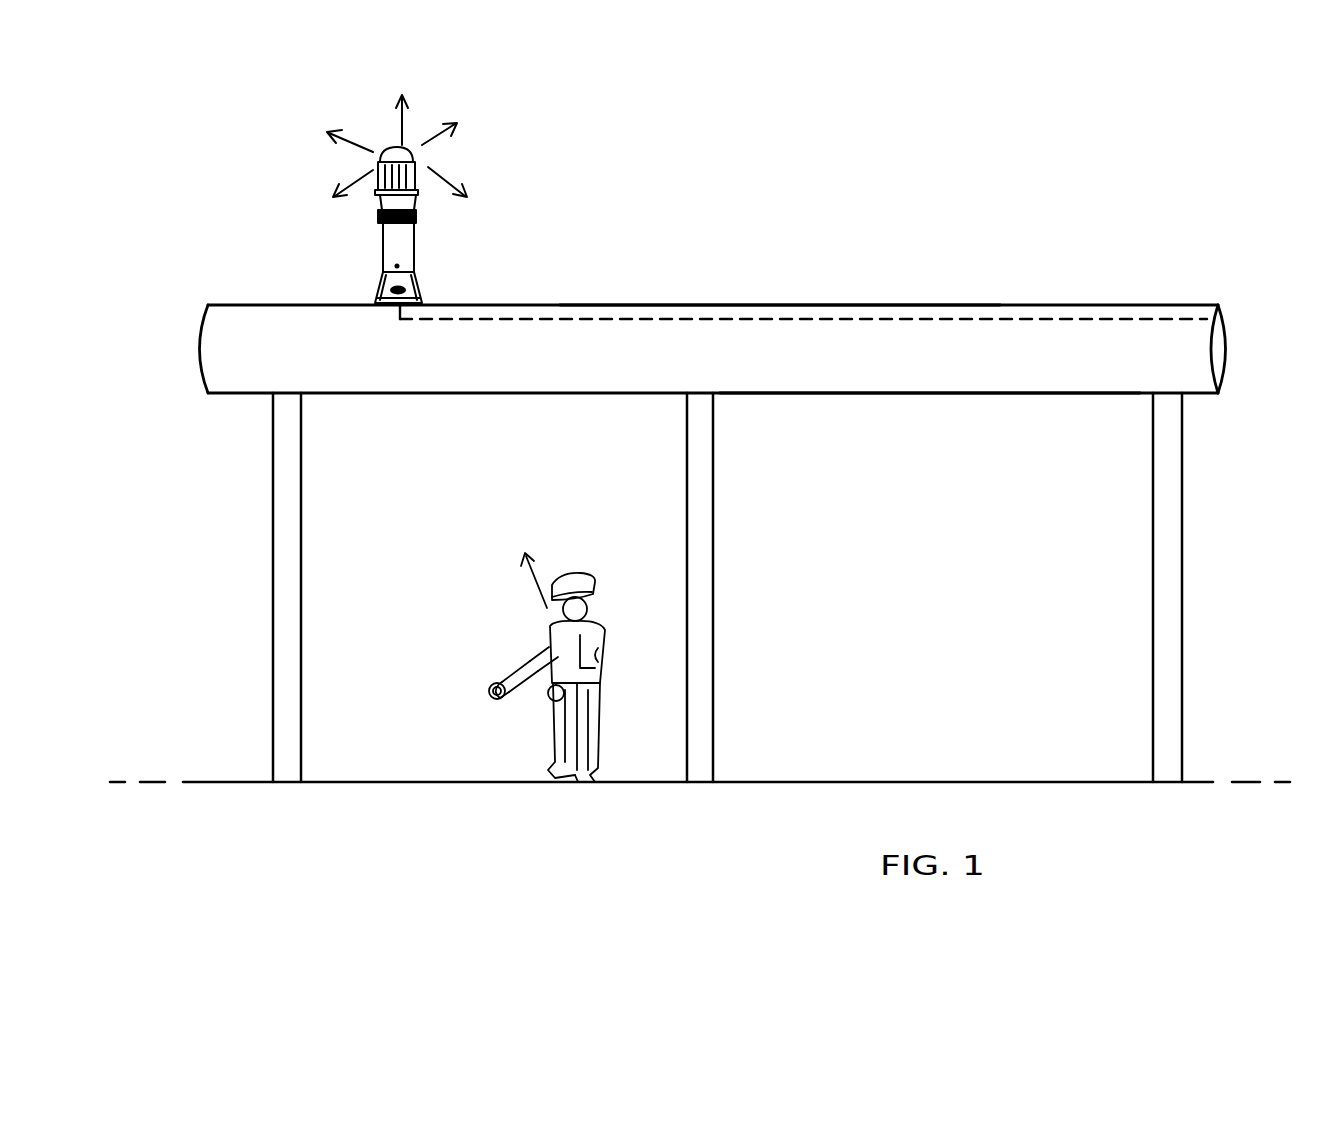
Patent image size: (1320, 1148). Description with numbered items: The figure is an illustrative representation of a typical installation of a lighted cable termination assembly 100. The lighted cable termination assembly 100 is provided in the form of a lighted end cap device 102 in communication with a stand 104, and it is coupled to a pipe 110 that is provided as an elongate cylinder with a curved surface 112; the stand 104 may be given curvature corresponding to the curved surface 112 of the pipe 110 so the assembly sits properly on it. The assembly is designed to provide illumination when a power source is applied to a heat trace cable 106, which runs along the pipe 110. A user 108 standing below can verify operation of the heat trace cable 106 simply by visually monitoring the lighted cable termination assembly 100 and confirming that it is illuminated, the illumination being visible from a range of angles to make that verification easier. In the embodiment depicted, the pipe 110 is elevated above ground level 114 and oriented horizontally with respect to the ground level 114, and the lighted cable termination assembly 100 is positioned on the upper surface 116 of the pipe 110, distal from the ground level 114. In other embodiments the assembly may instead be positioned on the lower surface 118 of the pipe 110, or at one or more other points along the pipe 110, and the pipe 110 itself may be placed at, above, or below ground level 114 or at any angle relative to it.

The lighted cable termination assembly 100 is at (316, 162).
The lighted end cap device 102 is at (416, 158).
The stand 104 is at (390, 248).
The heat trace cable 106 is at (465, 320).
The user 108 is at (597, 782).
The pipe 110 is at (941, 367).
The curved surface 112 is at (194, 349).
The ground level 114 is at (215, 783).
The upper surface 116 is at (643, 305).
The lower surface 118 is at (785, 393).